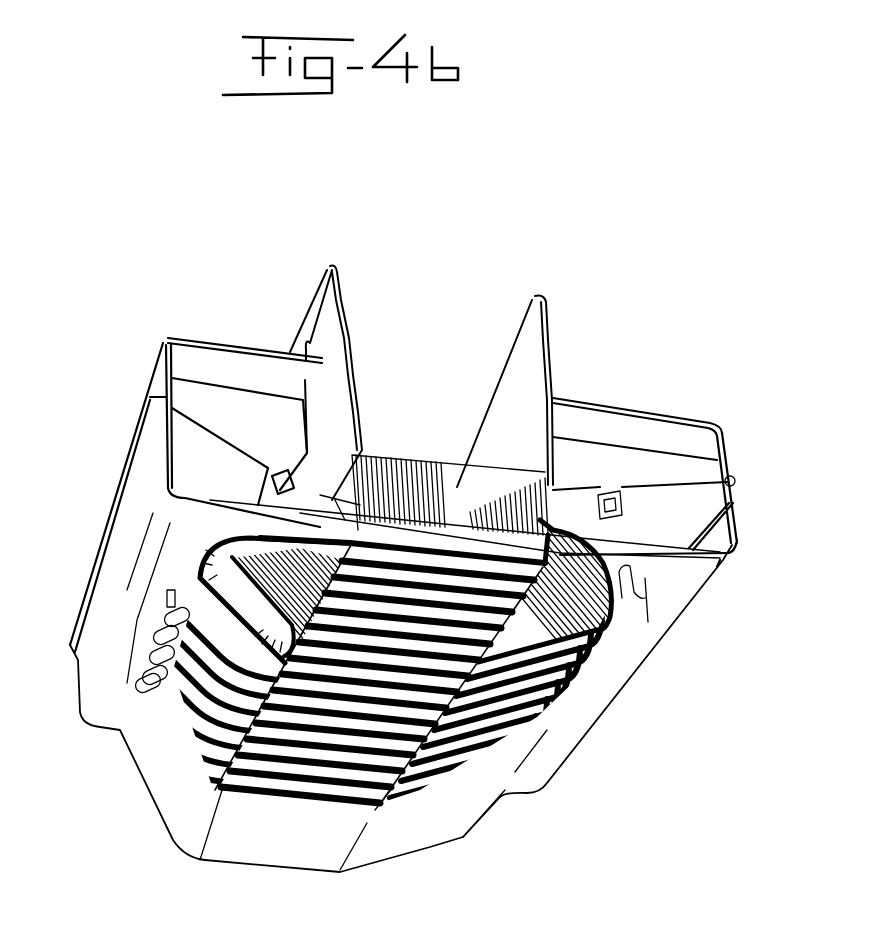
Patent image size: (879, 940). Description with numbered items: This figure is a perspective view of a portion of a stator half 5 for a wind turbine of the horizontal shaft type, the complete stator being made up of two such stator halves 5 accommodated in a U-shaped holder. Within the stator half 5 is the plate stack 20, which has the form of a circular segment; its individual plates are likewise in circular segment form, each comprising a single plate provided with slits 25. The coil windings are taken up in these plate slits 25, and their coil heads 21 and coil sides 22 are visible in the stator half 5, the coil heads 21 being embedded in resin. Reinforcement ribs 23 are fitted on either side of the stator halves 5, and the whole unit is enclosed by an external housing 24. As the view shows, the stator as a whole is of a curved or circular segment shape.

The stator half 5 is at (426, 352).
The plate stack 20 is at (428, 440).
The coil head 21 is at (617, 660).
The coil side 22 is at (558, 518).
The reinforcement rib 23 is at (635, 455).
The external housing 24 is at (128, 367).
The plate slit 25 is at (332, 502).